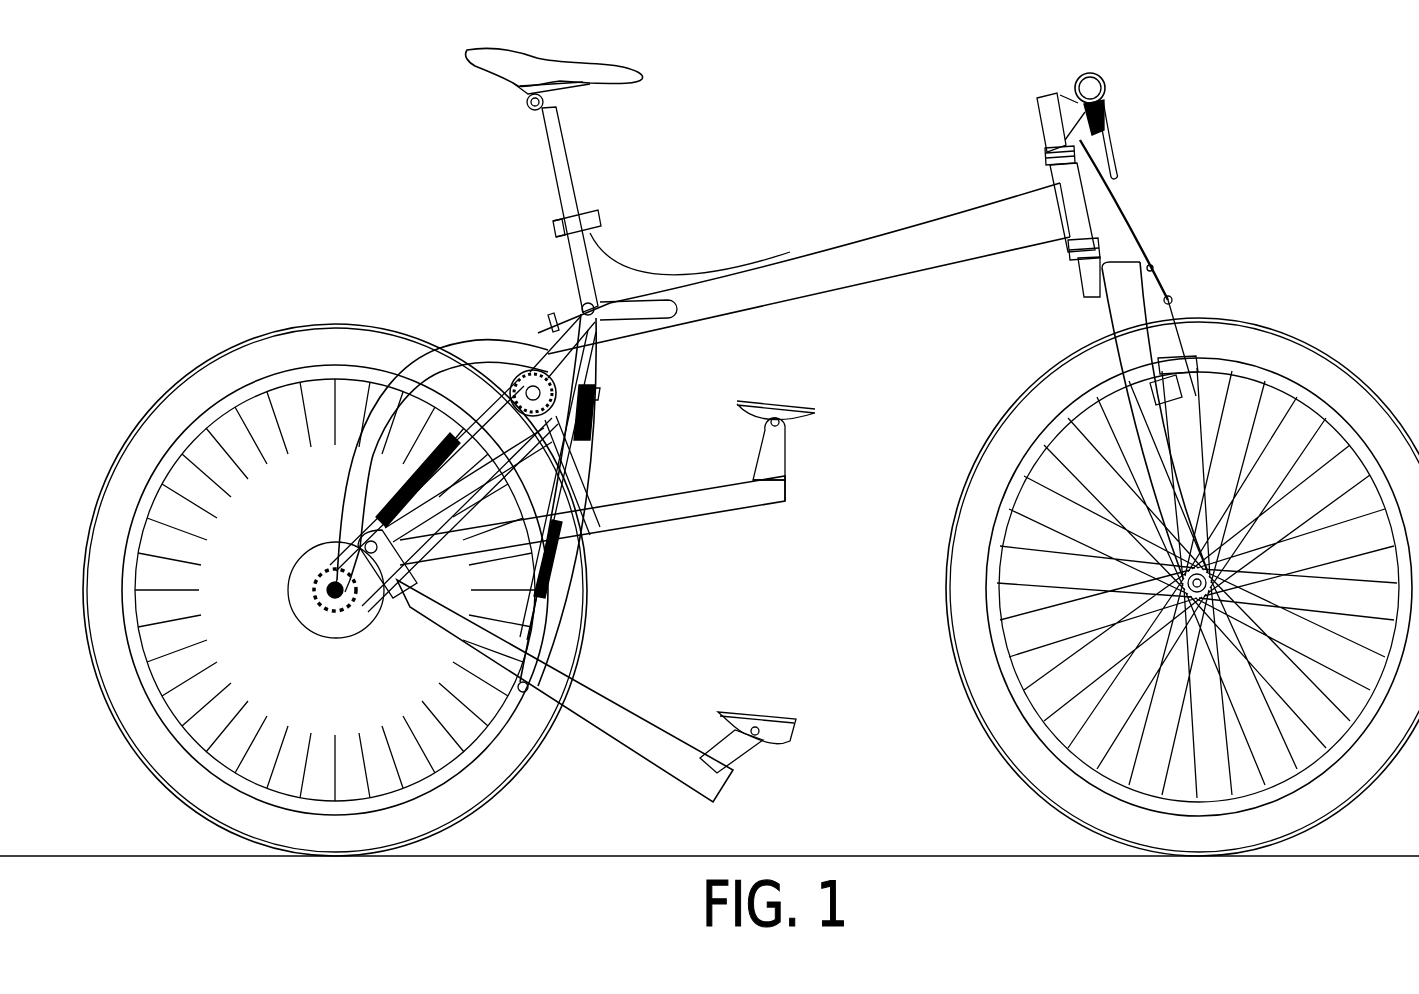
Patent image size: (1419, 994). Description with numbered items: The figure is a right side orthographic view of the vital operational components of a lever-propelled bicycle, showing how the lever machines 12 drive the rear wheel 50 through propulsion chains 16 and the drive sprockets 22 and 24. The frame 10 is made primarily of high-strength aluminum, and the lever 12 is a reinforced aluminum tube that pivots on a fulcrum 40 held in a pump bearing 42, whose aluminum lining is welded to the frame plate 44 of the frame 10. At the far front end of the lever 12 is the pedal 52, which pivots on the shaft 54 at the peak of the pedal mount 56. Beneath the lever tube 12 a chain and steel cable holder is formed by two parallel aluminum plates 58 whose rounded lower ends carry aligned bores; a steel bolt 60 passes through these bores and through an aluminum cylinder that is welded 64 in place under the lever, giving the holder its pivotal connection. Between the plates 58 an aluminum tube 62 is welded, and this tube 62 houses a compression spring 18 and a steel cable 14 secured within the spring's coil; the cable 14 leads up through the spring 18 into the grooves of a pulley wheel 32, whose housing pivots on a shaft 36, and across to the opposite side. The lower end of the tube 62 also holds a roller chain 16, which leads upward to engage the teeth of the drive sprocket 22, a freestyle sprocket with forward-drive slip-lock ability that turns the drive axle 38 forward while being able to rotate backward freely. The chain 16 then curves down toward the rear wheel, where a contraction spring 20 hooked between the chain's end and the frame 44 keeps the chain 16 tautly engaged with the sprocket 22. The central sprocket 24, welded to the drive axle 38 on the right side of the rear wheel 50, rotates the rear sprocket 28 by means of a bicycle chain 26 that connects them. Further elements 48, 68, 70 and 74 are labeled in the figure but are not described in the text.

The frame 10 is at (765, 304).
The lever machine 12 is at (690, 508).
The steel cable 14 is at (582, 493).
The propulsion chain 16 is at (588, 492).
The compression spring 18 is at (560, 556).
The contraction spring 20 is at (454, 448).
The drive sprocket 22 is at (520, 365).
The central sprocket 24 is at (583, 365).
The bicycle chain 26 is at (370, 638).
The rear sprocket 28 is at (340, 614).
The pulley wheel 32 is at (592, 396).
The shaft 36 is at (577, 306).
The drive axle 38 is at (546, 338).
The fulcrum 40 is at (366, 548).
The pump bearing 42 is at (348, 480).
The frame plate 44 is at (368, 510).
The chain 48 is at (428, 546).
The rear wheel 50 is at (345, 354).
The pedal 52 is at (812, 398).
The shaft 54 is at (782, 428).
The pedal mount 56 is at (778, 458).
The aluminum plates 58 is at (547, 632).
The steel bolt 60 is at (524, 705).
The aluminum tube 62 is at (552, 587).
The weld 64 is at (530, 698).
The seat 68 is at (512, 65).
The pivot 70 is at (410, 598).
The stop 74 is at (566, 312).